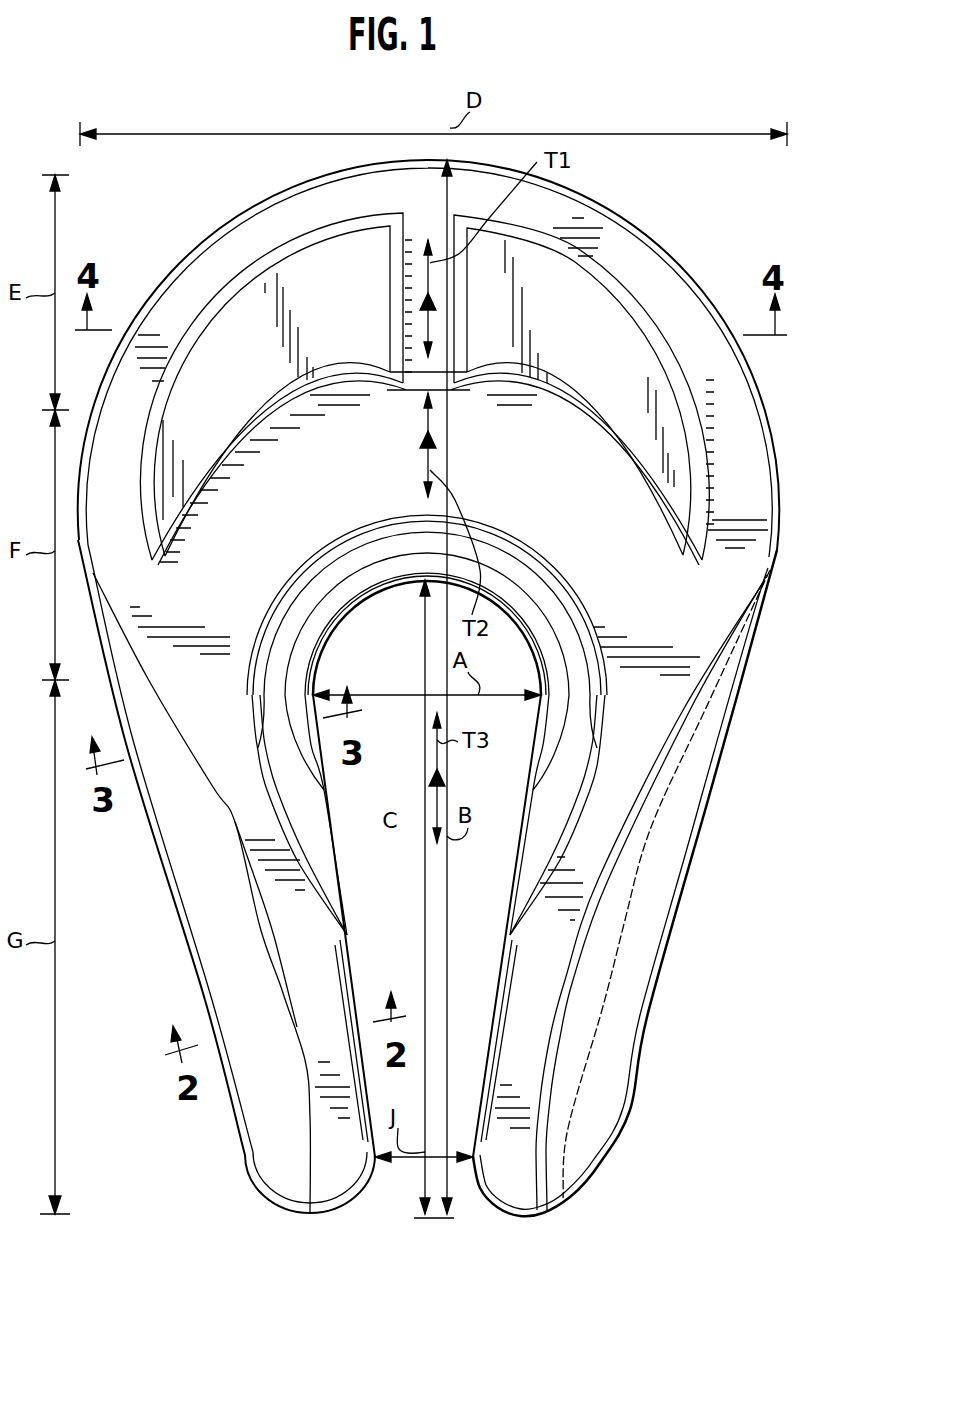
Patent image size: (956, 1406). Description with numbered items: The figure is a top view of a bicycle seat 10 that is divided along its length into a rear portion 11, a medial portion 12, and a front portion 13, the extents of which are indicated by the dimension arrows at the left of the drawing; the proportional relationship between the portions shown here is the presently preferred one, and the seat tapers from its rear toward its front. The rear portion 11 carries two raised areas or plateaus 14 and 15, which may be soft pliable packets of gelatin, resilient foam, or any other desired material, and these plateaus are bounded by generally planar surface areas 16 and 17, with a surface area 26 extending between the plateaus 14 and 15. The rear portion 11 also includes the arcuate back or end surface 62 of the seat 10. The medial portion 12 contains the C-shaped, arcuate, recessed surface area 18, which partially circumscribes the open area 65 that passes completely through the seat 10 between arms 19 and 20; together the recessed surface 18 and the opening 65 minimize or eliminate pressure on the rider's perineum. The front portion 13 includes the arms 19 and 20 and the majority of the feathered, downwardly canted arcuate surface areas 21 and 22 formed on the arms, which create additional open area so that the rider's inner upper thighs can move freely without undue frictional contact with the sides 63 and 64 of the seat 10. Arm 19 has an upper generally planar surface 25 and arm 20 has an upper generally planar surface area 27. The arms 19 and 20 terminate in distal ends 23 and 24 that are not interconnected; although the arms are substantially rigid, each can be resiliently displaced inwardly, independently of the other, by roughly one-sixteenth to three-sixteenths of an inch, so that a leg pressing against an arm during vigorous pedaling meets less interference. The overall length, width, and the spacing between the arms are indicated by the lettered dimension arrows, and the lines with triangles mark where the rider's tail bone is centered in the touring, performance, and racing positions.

The bicycle seat 10 is at (448, 712).
The rear portion 11 is at (155, 261).
The medial portion 12 is at (780, 647).
The front portion 13 is at (248, 1132).
The plateau 14 is at (241, 368).
The plateau 15 is at (576, 356).
The planar surface area 16 is at (526, 491).
The planar surface area 17 is at (180, 313).
The recessed surface area 18 is at (535, 598).
The arm 19 is at (194, 876).
The arm 20 is at (621, 920).
The canted arcuate surface area 21 is at (197, 883).
The canted arcuate surface area 22 is at (628, 1035).
The distal end 23 is at (330, 1215).
The distal end 24 is at (526, 1218).
The upper planar surface 25 is at (311, 1040).
The surface area 26 is at (428, 290).
The upper planar surface area 27 is at (506, 1048).
The arcuate back surface 62 is at (258, 205).
The side 63 is at (700, 848).
The side 64 is at (160, 855).
The open area 65 is at (393, 657).